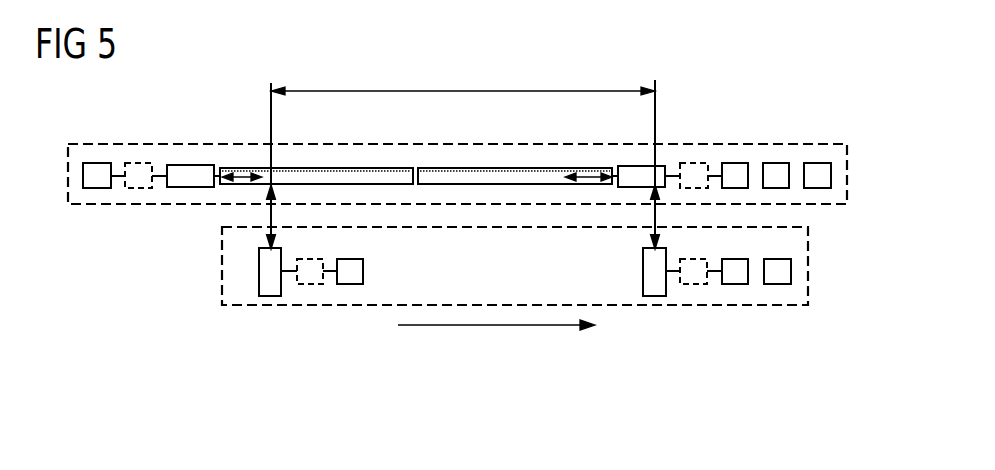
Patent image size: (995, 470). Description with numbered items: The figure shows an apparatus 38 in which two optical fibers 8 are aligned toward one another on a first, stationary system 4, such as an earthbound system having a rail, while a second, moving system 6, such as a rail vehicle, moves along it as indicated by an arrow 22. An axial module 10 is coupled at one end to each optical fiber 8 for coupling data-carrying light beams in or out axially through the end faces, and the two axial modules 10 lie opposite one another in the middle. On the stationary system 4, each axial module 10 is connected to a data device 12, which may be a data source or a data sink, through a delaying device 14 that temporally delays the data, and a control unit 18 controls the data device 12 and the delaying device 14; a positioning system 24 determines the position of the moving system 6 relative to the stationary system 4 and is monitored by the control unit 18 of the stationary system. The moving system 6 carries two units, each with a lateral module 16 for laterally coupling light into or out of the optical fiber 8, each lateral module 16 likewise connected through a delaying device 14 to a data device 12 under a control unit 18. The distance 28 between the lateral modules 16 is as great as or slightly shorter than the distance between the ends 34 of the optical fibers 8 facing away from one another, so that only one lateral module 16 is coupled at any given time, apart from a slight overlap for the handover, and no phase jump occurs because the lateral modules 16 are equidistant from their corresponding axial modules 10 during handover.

The first system 4 is at (114, 205).
The second system 6 is at (222, 262).
The optical fiber 8 is at (336, 168).
The axial module 10 is at (191, 165).
The data device 12 is at (100, 163).
The delaying device 14 is at (140, 163).
The lateral module 16 is at (270, 296).
The control unit 18 is at (775, 163).
The arrow 22 is at (498, 327).
The positioning system 24 is at (816, 163).
The distance 28 is at (458, 90).
The ends 34 is at (222, 168).
The apparatus 38 is at (770, 70).